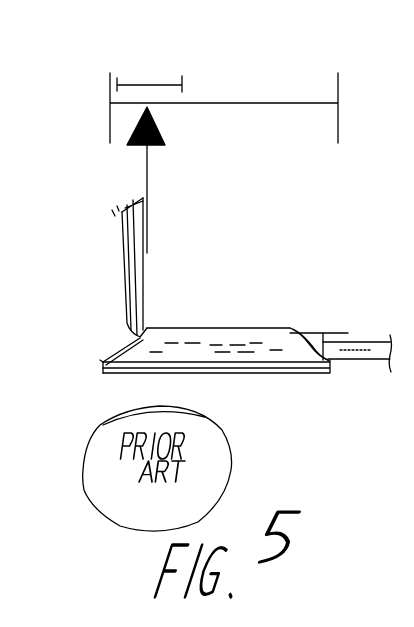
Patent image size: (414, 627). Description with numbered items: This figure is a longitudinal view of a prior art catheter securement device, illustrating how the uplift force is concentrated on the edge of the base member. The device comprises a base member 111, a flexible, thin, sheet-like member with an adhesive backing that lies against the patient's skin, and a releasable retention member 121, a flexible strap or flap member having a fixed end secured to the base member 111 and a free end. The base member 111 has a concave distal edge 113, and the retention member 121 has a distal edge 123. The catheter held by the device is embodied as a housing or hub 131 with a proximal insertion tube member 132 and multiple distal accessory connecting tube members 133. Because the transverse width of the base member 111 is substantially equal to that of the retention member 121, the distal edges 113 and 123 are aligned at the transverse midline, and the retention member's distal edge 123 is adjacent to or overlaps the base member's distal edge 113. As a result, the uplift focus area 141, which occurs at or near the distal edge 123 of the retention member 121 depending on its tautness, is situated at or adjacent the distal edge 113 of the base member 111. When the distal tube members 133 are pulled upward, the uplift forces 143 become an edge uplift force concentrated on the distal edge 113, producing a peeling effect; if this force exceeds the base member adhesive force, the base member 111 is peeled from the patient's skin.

The base member 111 is at (252, 398).
The distal edge of the base member 113 is at (80, 397).
The retention member 121 is at (247, 333).
The distal edge of the retention member 123 is at (99, 359).
The housing or hub 131 is at (309, 337).
The proximal tube member 132 is at (360, 341).
The distal tube members 133 is at (124, 270).
The uplift focus area 141 is at (200, 51).
The uplift forces 143 is at (166, 180).